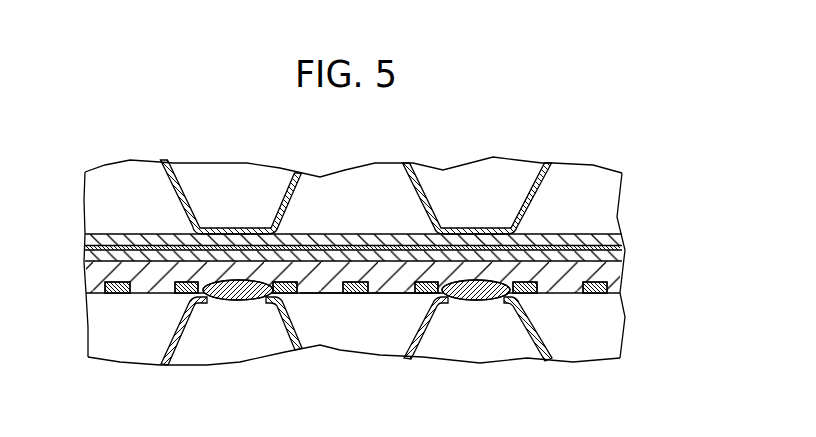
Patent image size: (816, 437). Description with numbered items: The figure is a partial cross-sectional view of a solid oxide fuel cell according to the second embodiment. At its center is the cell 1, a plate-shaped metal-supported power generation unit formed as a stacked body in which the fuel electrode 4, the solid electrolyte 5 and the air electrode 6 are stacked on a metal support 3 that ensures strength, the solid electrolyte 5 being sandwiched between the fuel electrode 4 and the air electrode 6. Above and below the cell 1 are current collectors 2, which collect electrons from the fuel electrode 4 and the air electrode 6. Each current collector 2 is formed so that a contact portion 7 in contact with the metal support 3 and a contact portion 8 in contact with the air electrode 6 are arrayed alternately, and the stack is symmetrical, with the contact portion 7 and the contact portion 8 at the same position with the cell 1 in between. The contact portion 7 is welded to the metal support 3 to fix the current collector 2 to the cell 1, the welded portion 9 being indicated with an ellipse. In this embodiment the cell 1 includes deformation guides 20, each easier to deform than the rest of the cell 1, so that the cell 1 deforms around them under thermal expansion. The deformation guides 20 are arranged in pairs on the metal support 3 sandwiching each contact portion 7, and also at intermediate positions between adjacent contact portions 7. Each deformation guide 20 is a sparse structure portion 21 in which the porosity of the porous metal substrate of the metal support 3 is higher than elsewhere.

The cell 1 is at (403, 252).
The current collector 2 is at (170, 203).
The metal support 3 is at (385, 285).
The fuel electrode 4 is at (625, 260).
The solid electrolyte 5 is at (625, 250).
The air electrode 6 is at (625, 238).
The contact portion 7 is at (203, 303).
The contact portion 8 is at (237, 228).
The welded portion 9 is at (245, 293).
The deformation guide 20 is at (365, 300).
The sparse structure portion 21 is at (170, 292).